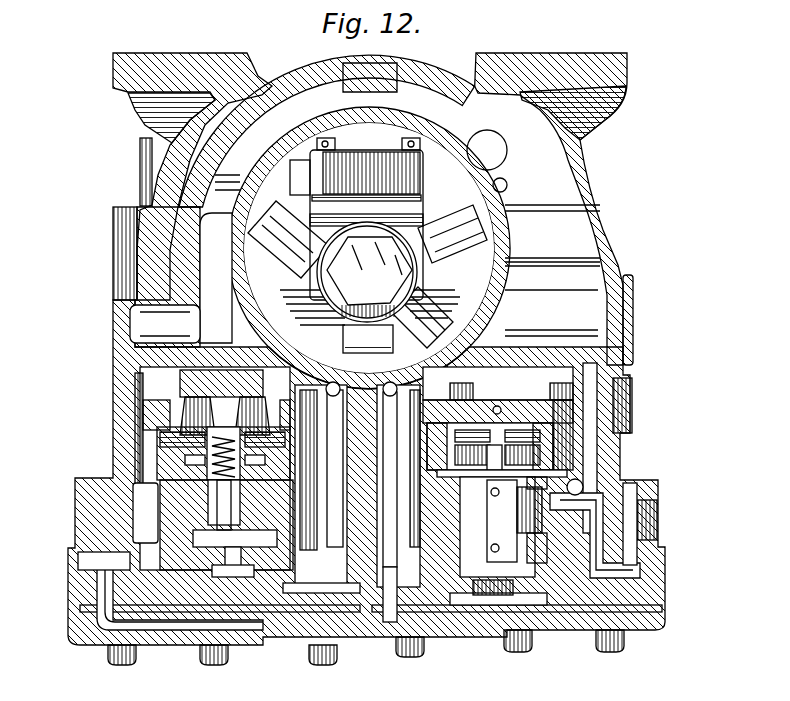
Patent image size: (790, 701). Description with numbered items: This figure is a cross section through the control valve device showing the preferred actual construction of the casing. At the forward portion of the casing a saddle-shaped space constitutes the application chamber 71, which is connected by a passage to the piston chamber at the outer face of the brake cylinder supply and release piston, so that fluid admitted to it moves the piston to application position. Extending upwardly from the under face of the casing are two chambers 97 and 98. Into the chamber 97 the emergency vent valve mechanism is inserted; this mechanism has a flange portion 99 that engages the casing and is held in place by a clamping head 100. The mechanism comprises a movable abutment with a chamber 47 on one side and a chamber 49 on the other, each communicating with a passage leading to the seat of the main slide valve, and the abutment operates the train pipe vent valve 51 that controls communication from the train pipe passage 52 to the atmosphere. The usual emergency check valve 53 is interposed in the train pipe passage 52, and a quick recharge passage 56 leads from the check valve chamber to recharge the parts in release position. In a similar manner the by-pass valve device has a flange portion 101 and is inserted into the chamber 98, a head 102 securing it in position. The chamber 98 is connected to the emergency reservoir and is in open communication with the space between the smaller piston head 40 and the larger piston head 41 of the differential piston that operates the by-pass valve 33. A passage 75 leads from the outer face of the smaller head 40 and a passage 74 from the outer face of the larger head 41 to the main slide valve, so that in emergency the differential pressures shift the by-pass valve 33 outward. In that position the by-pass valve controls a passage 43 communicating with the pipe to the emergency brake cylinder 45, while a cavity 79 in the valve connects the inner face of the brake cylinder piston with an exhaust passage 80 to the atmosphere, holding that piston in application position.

The application chamber 71 is at (527, 154).
The chamber 97 is at (135, 437).
The chamber 98 is at (600, 418).
The chamber 47 is at (255, 405).
The emergency brake cylinder 45 is at (223, 453).
The chamber 49 is at (145, 513).
The train pipe vent valve 51 is at (207, 502).
The emergency check valve 53 is at (226, 528).
The quick recharge passage 56 is at (340, 525).
The passage 74 is at (385, 413).
The passage 75 is at (500, 409).
The piston head 40 is at (470, 428).
The by-pass valve 33 is at (525, 493).
The cavity 79 is at (500, 523).
The exhaust passage 80 is at (547, 522).
The piston head 41 is at (535, 577).
The passage 43 is at (565, 478).
The flange portion 101 is at (627, 586).
The train pipe passage 52 is at (170, 632).
The flange portion 99 is at (120, 598).
The clamping head 100 is at (294, 628).
The head 102 is at (572, 625).